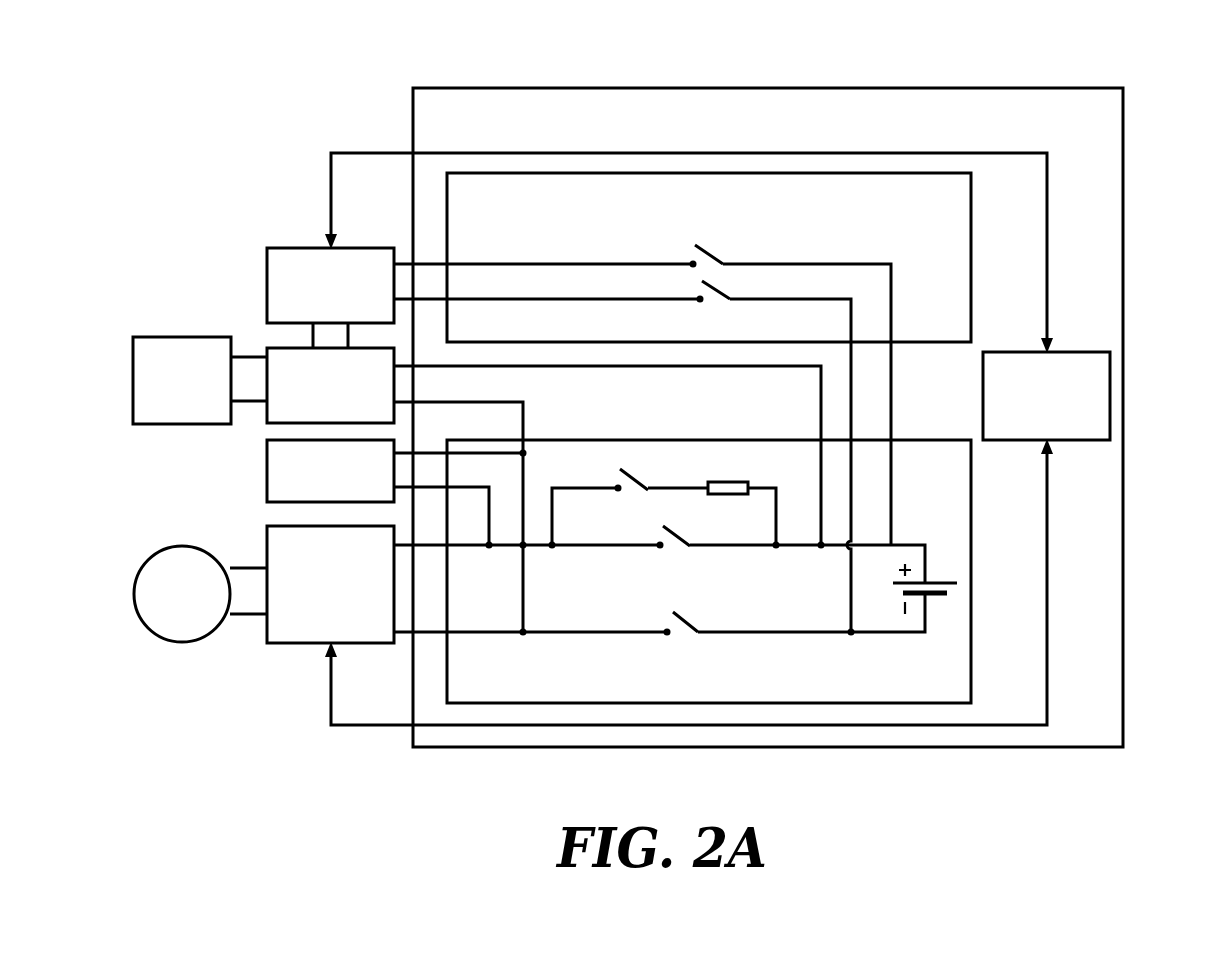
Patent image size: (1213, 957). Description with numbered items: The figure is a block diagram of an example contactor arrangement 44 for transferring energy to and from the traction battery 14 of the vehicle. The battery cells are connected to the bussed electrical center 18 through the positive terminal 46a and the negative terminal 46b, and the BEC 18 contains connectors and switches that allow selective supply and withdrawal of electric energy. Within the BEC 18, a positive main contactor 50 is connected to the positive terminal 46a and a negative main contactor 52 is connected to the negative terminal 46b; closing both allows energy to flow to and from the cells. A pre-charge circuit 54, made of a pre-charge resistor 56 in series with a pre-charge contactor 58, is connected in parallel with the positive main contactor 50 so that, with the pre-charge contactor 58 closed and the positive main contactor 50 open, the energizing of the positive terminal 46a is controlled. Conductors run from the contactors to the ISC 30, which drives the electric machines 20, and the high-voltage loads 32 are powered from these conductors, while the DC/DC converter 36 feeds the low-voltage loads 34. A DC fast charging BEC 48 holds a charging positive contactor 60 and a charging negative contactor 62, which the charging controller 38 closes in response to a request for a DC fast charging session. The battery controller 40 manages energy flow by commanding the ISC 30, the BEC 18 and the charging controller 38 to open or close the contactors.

The contactor arrangement 44 is at (1182, 91).
The traction battery 14 is at (628, 417).
The DC fast charging BEC 48 is at (682, 402).
The DC fast charging positive contactor 60 is at (712, 256).
The DC fast charging negative contactor 62 is at (732, 297).
The charging controller 38 is at (330, 298).
The DC/DC converter 36 is at (546, 492).
The low-voltage loads 34 is at (200, 380).
The high-voltage loads 32 is at (395, 494).
The ISC 30 is at (312, 584).
The electric machines 20 is at (182, 594).
The battery controller 40 is at (1046, 396).
The bussed electrical center 18 is at (682, 552).
The pre-charge circuit 54 is at (706, 455).
The positive main contactor 50 is at (685, 537).
The pre-charge contactor 58 is at (636, 480).
The pre-charge resistor 56 is at (730, 482).
The negative main contactor 52 is at (691, 620).
The positive terminal 46a is at (946, 583).
The negative terminal 46b is at (945, 595).